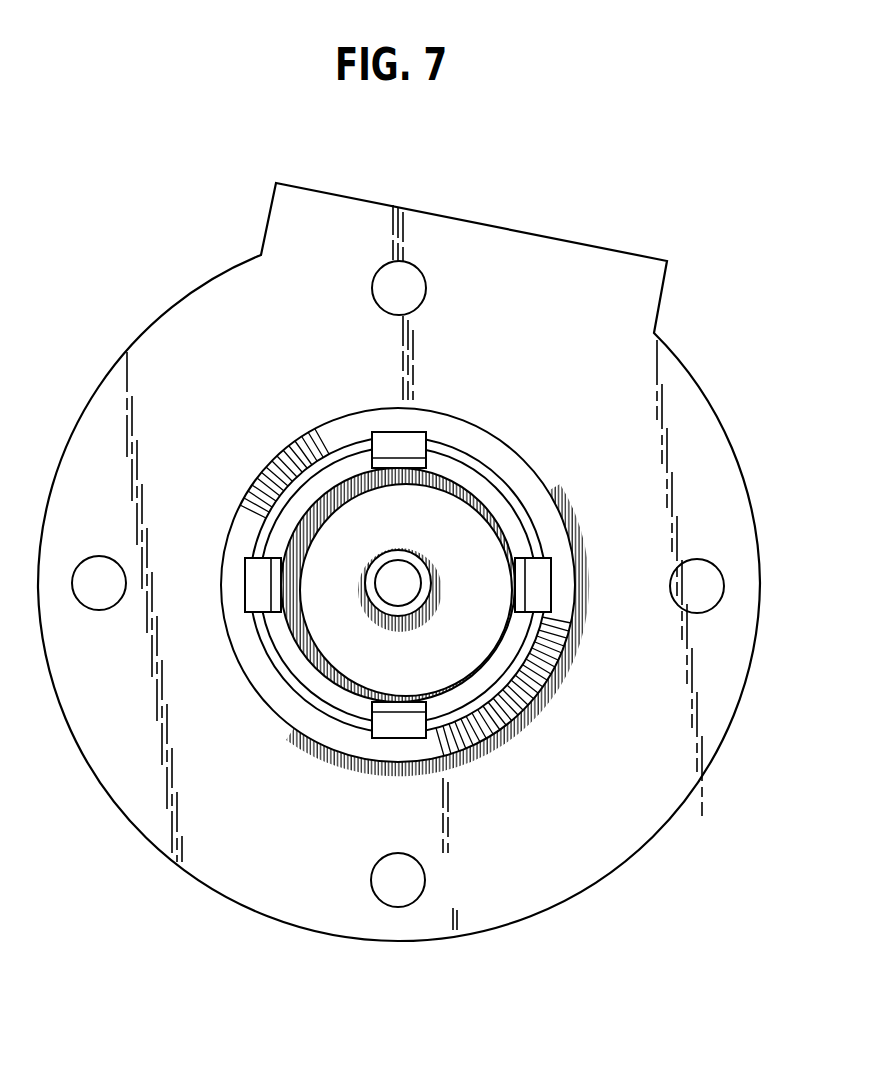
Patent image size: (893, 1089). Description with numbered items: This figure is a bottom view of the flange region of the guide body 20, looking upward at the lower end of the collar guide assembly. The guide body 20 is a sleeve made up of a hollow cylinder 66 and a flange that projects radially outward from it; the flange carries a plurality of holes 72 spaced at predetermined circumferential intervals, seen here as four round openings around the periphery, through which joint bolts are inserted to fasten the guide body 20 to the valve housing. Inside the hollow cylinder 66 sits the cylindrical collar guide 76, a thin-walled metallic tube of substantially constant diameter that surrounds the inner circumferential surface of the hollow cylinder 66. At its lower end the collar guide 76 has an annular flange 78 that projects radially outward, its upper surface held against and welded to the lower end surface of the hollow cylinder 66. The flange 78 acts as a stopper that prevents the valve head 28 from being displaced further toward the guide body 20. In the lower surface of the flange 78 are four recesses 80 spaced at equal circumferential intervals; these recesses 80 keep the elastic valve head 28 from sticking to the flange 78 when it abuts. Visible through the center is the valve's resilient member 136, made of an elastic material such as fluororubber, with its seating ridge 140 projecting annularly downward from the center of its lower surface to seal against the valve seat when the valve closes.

The guide body 20 is at (698, 382).
The valve head 28 is at (457, 660).
The hollow cylinder 66 is at (528, 470).
The holes 72 is at (385, 290).
The collar guide 76 is at (337, 680).
The annular flange 78 is at (295, 670).
The recesses 80 is at (392, 446).
The resilient member 136 is at (378, 520).
The seating ridge 140 is at (431, 572).